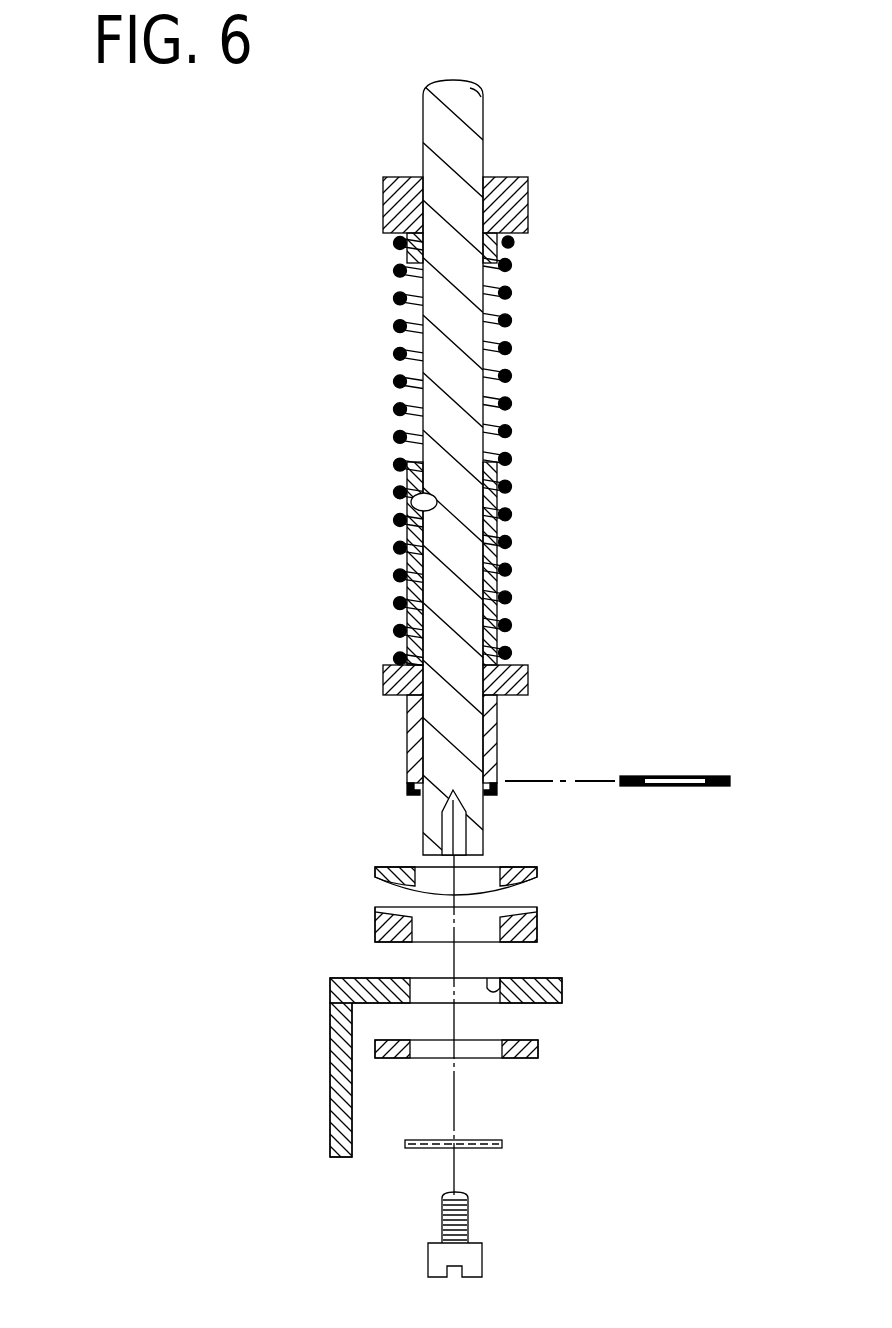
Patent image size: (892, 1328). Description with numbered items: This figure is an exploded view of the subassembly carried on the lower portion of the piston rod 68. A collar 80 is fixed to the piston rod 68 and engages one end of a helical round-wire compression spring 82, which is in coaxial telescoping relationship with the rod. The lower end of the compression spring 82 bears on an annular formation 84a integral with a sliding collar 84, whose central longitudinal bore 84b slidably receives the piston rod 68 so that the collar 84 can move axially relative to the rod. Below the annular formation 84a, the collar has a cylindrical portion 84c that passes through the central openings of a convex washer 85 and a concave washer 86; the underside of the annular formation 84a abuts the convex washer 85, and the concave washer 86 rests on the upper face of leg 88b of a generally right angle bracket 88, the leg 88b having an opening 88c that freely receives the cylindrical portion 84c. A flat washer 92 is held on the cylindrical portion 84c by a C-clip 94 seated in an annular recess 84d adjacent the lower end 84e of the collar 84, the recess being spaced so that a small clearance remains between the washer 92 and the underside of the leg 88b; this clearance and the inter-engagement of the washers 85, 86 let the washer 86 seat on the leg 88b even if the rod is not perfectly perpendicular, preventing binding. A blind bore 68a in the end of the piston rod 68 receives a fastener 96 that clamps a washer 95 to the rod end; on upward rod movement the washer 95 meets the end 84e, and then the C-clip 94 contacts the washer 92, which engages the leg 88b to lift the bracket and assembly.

The piston rod 68 is at (485, 830).
The blind bore 68a is at (445, 838).
The collar 80 is at (383, 200).
The helical round-wire compression spring 82 is at (400, 330).
The sliding collar 84 is at (420, 588).
The annular formation 84a is at (525, 685).
The central longitudinal bore 84b is at (411, 503).
The cylindrical portion 84c is at (407, 740).
The annular recess 84d is at (407, 782).
The lower end of collar 84e is at (497, 795).
The convex washer 85 is at (537, 875).
The concave washer 86 is at (537, 925).
The right angle bracket 88 is at (496, 1053).
The bracket leg 88b is at (562, 1000).
The opening 88c is at (495, 982).
The flat washer 92 is at (538, 1050).
The C-clip 94 is at (728, 778).
The washer 95 is at (495, 1148).
The fastener 96 is at (482, 1262).